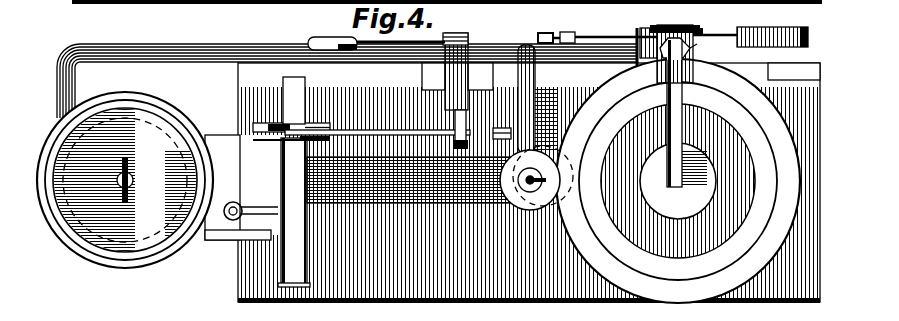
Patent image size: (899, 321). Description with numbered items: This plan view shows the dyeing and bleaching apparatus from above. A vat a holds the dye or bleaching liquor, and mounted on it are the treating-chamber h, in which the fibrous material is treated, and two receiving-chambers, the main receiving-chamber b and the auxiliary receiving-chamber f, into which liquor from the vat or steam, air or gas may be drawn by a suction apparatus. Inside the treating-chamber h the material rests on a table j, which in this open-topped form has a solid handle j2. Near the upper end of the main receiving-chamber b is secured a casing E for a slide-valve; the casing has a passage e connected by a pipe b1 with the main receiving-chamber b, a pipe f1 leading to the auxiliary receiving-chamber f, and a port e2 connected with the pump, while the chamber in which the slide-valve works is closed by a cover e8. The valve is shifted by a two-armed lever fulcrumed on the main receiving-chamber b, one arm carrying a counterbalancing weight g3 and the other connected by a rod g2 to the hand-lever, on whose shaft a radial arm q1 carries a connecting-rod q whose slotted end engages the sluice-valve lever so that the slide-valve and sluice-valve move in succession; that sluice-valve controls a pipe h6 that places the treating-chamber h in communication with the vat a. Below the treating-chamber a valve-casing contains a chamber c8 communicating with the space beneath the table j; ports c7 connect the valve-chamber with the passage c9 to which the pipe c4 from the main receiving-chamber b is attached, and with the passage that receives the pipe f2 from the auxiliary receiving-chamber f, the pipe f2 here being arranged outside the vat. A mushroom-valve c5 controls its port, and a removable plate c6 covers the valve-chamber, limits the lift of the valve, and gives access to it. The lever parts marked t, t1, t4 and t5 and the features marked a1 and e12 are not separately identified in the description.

The vat a is at (460, 280).
The base frame top recess a1 is at (432, 83).
The main receiving-chamber b is at (752, 216).
The pipe b1 is at (683, 124).
The pipe c4 is at (233, 201).
The mushroom-valve c5 is at (272, 122).
The removable plate c6 is at (236, 241).
The ports c7 is at (272, 238).
The chamber c8 is at (320, 123).
The passage c9 is at (298, 118).
The passage e is at (686, 27).
The port e2 is at (636, 50).
The cover e8 is at (672, 25).
The bearing seat e12 is at (706, 49).
The casing E is at (703, 30).
The auxiliary receiving-chamber f is at (536, 178).
The pipe f1 is at (518, 103).
The pipe f2 is at (259, 45).
The rod g2 is at (565, 31).
The weight g3 is at (765, 28).
The treating-chamber h is at (56, 139).
The pipe h6 is at (409, 180).
The table j is at (143, 222).
The solid handle j2 is at (133, 180).
The connecting-rod q is at (392, 130).
The radial arm q1 is at (492, 139).
The lever rod t is at (430, 40).
The lever post t1 is at (463, 32).
The rod block t4 is at (540, 33).
The lever handle t5 is at (329, 38).